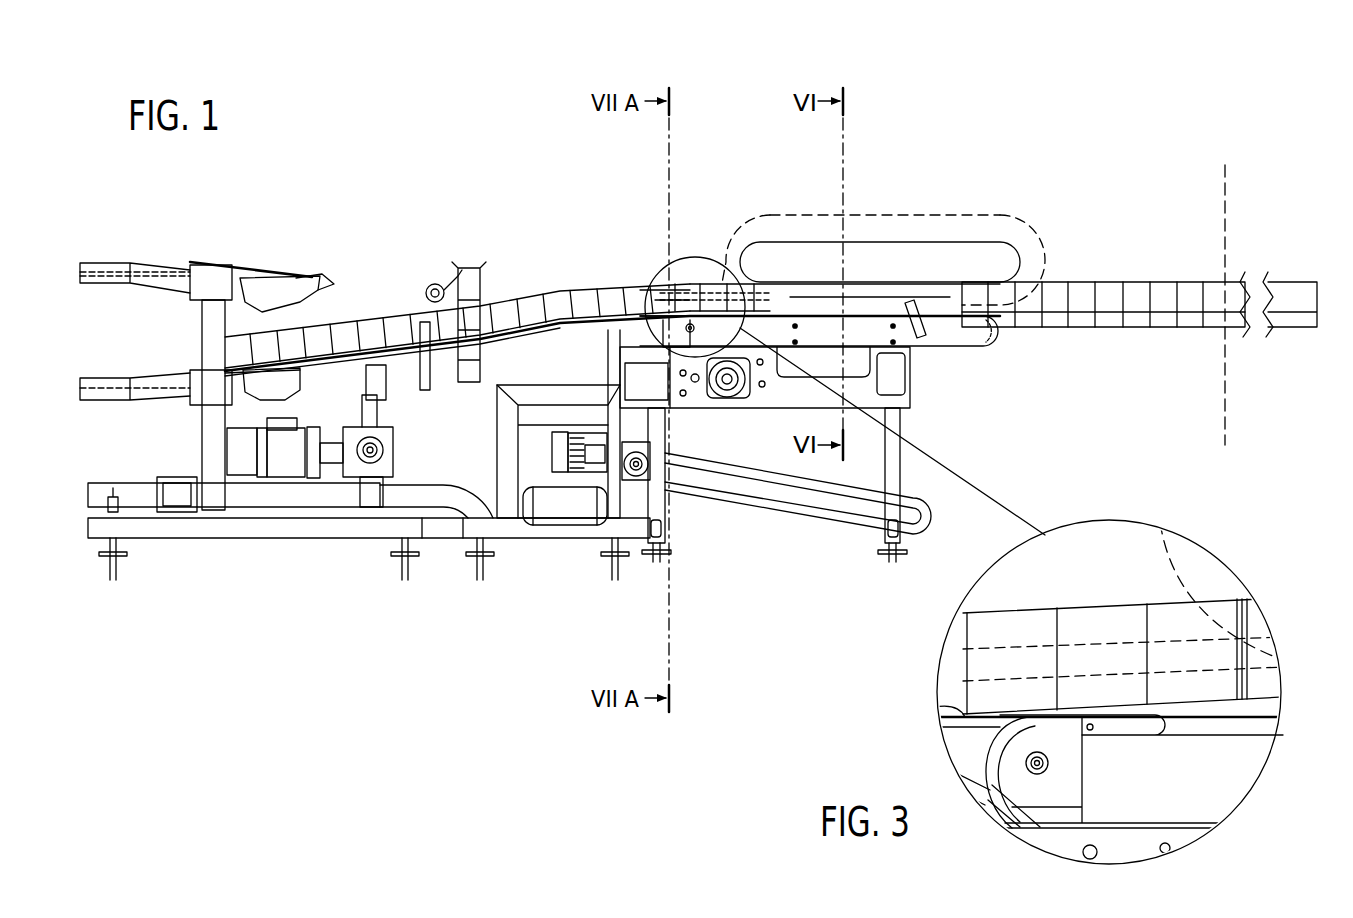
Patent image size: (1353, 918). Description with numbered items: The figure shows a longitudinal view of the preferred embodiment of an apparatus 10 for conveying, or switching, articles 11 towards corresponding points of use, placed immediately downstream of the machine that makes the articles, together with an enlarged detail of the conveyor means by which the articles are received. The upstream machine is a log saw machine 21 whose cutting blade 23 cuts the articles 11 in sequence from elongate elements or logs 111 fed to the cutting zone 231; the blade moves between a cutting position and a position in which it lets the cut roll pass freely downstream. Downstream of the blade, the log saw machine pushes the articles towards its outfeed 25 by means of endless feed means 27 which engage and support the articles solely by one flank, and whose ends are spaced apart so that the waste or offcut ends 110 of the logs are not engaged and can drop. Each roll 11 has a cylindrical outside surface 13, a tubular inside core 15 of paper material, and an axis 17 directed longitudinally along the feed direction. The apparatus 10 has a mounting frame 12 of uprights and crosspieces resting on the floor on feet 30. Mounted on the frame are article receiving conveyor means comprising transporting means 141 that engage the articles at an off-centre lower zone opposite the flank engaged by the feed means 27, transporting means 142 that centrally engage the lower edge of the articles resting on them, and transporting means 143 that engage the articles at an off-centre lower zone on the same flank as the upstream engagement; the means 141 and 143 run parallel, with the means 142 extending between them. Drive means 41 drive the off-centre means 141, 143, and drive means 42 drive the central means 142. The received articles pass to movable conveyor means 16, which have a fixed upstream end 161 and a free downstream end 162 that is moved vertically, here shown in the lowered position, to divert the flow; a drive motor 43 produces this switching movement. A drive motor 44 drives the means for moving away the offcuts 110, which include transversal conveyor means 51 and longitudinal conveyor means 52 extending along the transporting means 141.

In FIG. 1, the apparatus 10 is at (404, 226).
In FIG. 1, the articles 11 is at (1110, 285).
In FIG. 1, the mounting frame 12 is at (162, 440).
In FIG. 1, the outside surface 13 is at (690, 288).
In FIG. 1, the tubular inside core 15 is at (641, 288).
In FIG. 1, the movable conveyor means 16 is at (502, 274).
In FIG. 1, the upstream end 161 is at (522, 273).
In FIG. 1, the free end 162 is at (240, 324).
In FIG. 1, the axis 17 is at (672, 288).
In FIG. 1, the log saw machine 21 is at (1032, 212).
In FIG. 1, the cutting blade 23 is at (1222, 164).
In FIG. 1, the cutting zone 231 is at (1203, 262).
In FIG. 1, the outfeed 25 is at (721, 210).
In FIG. 1, the feed means 27 is at (896, 224).
In FIG. 1, the feet 30 is at (117, 562).
In FIG. 1, the drive means 41 is at (737, 408).
In FIG. 1, the drive means 42 is at (373, 365).
In FIG. 1, the drive motor 43 is at (285, 465).
In FIG. 1, the drive motor 44 is at (585, 447).
In FIG. 1, the conveyor means 51 is at (544, 507).
In FIG. 1, the longitudinal conveyor means 52 is at (802, 527).
In FIG. 1, the waste or offcut ends 110 is at (924, 340).
In FIG. 1, the elongate elements or logs 111 is at (1237, 290).
In FIG. 1, the transporting means 141 is at (1007, 353).
In FIG. 1, the transporting means 142 is at (627, 292).
In FIG. 3, the transporting means 142 is at (958, 713).
In FIG. 1, the transporting means 143 is at (765, 290).
In FIG. 3, the transporting means 143 is at (1148, 735).